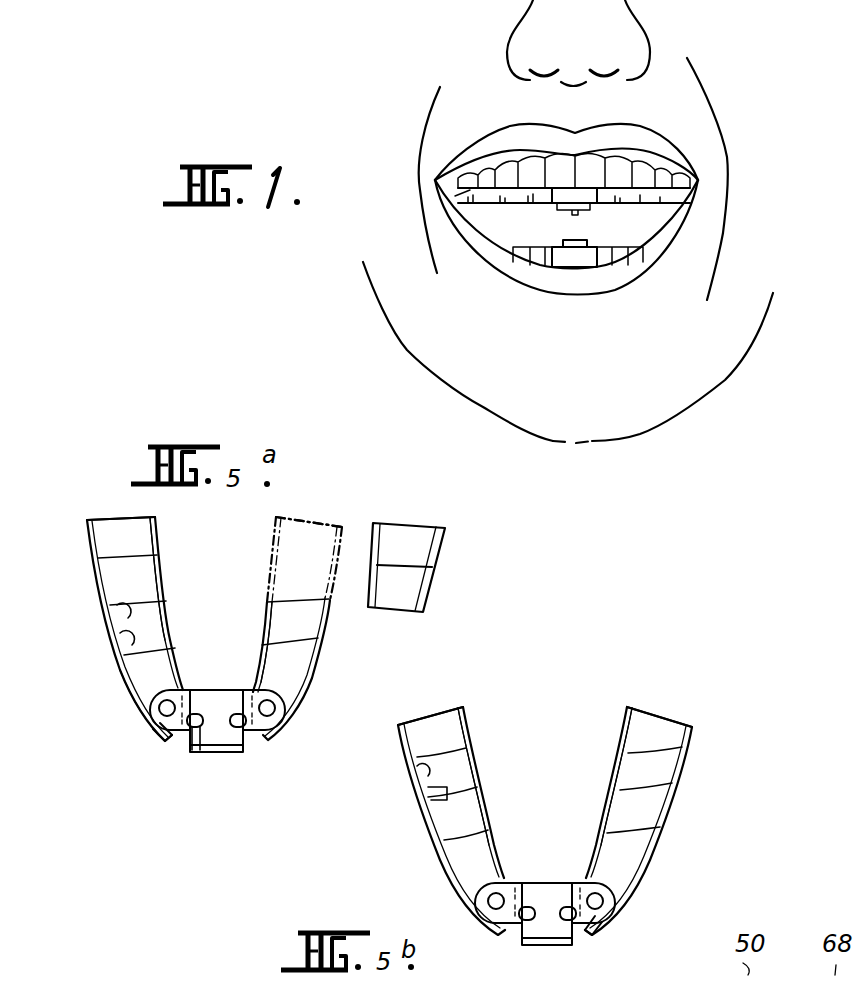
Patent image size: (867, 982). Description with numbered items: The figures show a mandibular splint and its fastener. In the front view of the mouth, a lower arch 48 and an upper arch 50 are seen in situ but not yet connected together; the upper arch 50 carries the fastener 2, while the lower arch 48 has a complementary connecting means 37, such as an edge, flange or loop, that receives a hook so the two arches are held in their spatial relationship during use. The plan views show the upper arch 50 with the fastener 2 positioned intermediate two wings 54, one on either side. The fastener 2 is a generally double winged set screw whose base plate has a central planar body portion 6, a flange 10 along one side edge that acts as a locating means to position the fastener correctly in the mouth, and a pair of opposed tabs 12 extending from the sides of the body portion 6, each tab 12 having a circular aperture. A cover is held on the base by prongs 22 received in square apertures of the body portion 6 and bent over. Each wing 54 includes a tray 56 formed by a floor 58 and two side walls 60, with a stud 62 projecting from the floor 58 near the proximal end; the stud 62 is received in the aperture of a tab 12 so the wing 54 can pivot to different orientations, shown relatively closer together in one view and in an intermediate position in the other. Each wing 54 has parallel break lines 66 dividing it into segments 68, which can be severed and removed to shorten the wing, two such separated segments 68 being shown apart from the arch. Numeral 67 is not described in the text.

In FIG. 1, the fastener 2 is at (590, 180).
In FIG. 5A, the fastener 2 is at (219, 686).
In FIG. 5B, the fastener 2 is at (547, 878).
In FIG. 5A, the body portion 6 is at (220, 730).
In FIG. 5B, the body portion 6 is at (545, 927).
In FIG. 1, the flange 10 is at (560, 188).
In FIG. 5A, the tab 12 is at (163, 733).
In FIG. 5B, the tab 12 is at (602, 927).
In FIG. 5A, the prong 22 is at (197, 755).
In FIG. 1, the complementary connecting means 37 is at (580, 250).
In FIG. 1, the lower arch 48 is at (536, 254).
In FIG. 1, the upper arch 50 is at (662, 197).
In FIG. 5A, the upper arch 50 is at (240, 585).
In FIG. 5B, the upper arch 50 is at (587, 736).
In FIG. 1, the wing 54 is at (474, 192).
In FIG. 5A, the wing 54 is at (122, 681).
In FIG. 5B, the wing 54 is at (436, 848).
In FIG. 5A, the tray 56 is at (157, 528).
In FIG. 5B, the tray 56 is at (477, 727).
In FIG. 5A, the floor 58 is at (116, 573).
In FIG. 5B, the floor 58 is at (653, 787).
In FIG. 5A, the side wall 60 is at (270, 607).
In FIG. 5B, the side wall 60 is at (612, 768).
In FIG. 5A, the stud 62 is at (260, 740).
In FIG. 5B, the stud 62 is at (480, 903).
In FIG. 5A, the break line 66 is at (117, 627).
In FIG. 5B, the break line 66 is at (420, 783).
In FIG. 5A, the rounded edge 67 is at (135, 717).
In FIG. 5A, the segment 68 is at (445, 550).